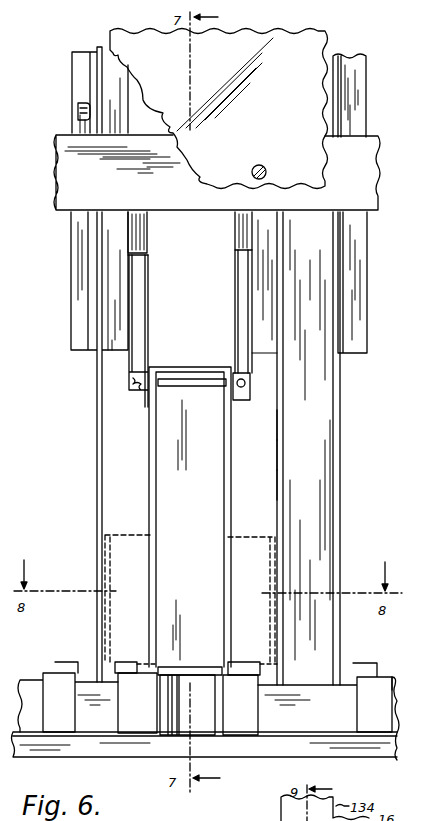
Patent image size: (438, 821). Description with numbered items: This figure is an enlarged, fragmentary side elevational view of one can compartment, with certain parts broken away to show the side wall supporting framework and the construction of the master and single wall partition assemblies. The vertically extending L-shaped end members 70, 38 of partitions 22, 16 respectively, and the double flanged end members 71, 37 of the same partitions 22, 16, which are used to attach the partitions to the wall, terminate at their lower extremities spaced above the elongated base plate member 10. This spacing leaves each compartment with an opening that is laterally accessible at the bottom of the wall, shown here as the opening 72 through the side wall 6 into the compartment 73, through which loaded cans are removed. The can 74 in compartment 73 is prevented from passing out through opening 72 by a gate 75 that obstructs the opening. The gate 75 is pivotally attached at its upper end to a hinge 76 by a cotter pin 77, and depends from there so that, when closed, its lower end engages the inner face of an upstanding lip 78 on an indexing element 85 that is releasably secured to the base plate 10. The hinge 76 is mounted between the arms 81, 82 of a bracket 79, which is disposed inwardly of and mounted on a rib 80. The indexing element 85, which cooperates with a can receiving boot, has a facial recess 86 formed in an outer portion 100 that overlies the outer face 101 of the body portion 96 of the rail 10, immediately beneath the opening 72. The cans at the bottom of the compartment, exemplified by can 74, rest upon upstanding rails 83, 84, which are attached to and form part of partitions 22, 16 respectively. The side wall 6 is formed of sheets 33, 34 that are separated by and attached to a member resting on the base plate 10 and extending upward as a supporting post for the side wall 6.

The side wall 6 is at (334, 41).
The elongated base plate member 10 is at (398, 672).
The partition 16 is at (368, 82).
The partition 22 is at (72, 70).
The sheet 33 is at (278, 480).
The sheet 34 is at (340, 507).
The double flanged end member 37 is at (368, 283).
The L-shaped end member 38 is at (240, 248).
The L-shaped end member 70 is at (71, 310).
The double flanged end member 71 is at (140, 256).
The opening 72 is at (272, 462).
The compartment 73 is at (272, 433).
The can 74 is at (116, 535).
The gate 75 is at (231, 504).
The hinge 76 is at (236, 401).
The cotter pin 77 is at (183, 380).
The upstanding lip 78 is at (193, 667).
The bracket 79 is at (148, 226).
The rib 80 is at (62, 212).
The arm 81 is at (148, 289).
The arm 82 is at (235, 291).
The upstanding rail 83 is at (124, 662).
The upstanding rail 84 is at (245, 666).
The indexing element 85 is at (261, 725).
The facial recess 86 is at (212, 726).
The body portion 96 is at (394, 675).
The outer portion 100 is at (115, 725).
The outer face 101 is at (293, 740).